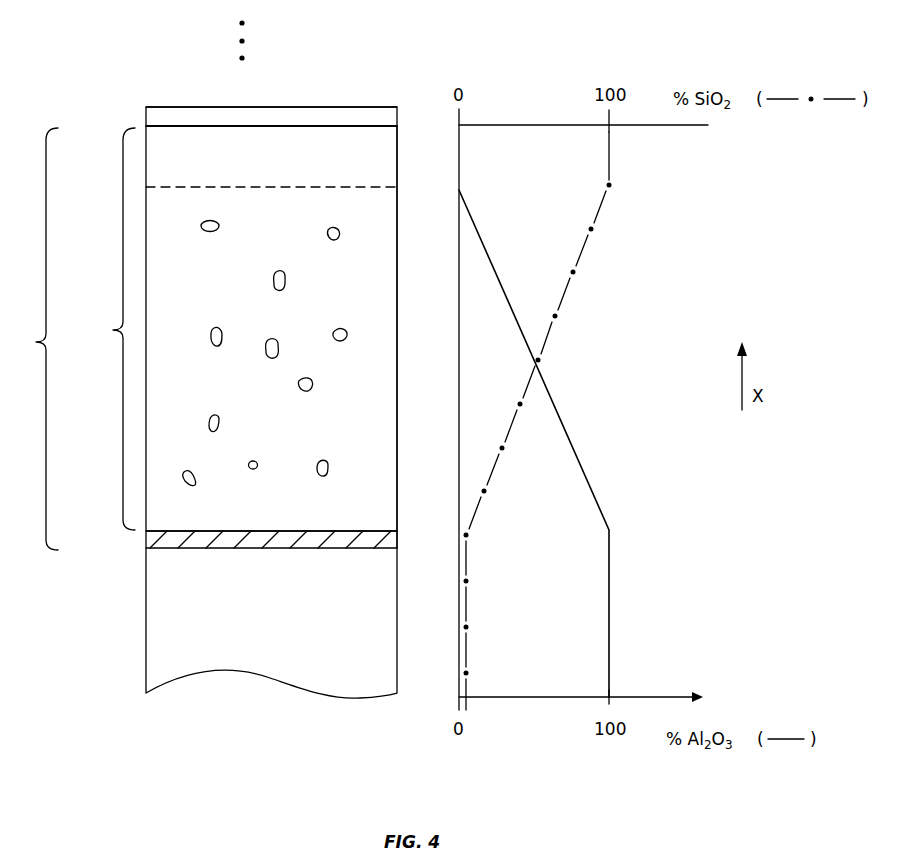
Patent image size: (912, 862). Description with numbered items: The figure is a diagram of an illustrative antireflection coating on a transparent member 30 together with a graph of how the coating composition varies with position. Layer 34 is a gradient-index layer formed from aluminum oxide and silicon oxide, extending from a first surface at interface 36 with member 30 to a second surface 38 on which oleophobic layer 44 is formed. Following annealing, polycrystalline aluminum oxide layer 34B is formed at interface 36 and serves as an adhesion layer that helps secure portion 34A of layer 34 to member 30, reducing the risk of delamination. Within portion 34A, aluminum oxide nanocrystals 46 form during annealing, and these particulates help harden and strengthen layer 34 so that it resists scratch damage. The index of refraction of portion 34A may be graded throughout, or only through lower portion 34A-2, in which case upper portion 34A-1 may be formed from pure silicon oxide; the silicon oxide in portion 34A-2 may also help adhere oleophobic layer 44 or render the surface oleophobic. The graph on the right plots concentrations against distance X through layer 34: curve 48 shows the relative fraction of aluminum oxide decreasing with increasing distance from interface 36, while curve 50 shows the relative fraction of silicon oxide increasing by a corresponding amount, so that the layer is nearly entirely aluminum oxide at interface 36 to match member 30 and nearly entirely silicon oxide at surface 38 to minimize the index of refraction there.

The member 30 is at (160, 650).
The layer 34 is at (34, 339).
The portion of layer 34A is at (236, 328).
The polycrystalline layer 34B is at (154, 538).
The interface 36 is at (262, 548).
The surface 38 is at (204, 126).
The oleophobic layer 44 is at (152, 118).
The crystals 46 is at (210, 232).
The upper portion 34A-1 is at (382, 398).
The lower portion 34A-2 is at (388, 146).
The curve 48 is at (588, 476).
The curve 50 is at (586, 250).